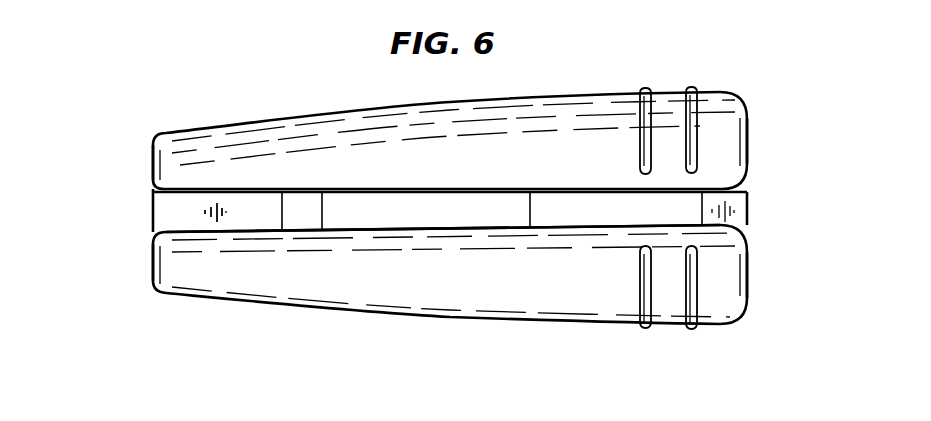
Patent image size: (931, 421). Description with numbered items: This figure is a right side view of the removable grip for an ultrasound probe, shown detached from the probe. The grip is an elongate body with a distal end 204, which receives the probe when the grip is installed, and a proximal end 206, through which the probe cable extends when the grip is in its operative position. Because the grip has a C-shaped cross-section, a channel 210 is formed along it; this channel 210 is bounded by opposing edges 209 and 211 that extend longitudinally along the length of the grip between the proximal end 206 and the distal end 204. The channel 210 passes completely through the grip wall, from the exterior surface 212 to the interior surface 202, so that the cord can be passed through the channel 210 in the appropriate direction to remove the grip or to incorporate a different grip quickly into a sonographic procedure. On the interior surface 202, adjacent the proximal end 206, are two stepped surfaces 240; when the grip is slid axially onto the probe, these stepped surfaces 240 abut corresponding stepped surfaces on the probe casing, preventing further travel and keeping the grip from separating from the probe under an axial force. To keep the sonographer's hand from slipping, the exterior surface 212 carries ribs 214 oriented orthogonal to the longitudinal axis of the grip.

The interior surface 202 is at (421, 221).
The distal end 204 is at (746, 326).
The proximal end 206 is at (143, 307).
The opposing edge 209 is at (606, 226).
The channel 210 is at (178, 215).
The opposing edge 211 is at (625, 192).
The exterior surface 212 is at (358, 277).
The ribs 214 is at (690, 327).
The stepped surfaces 240 is at (318, 221).